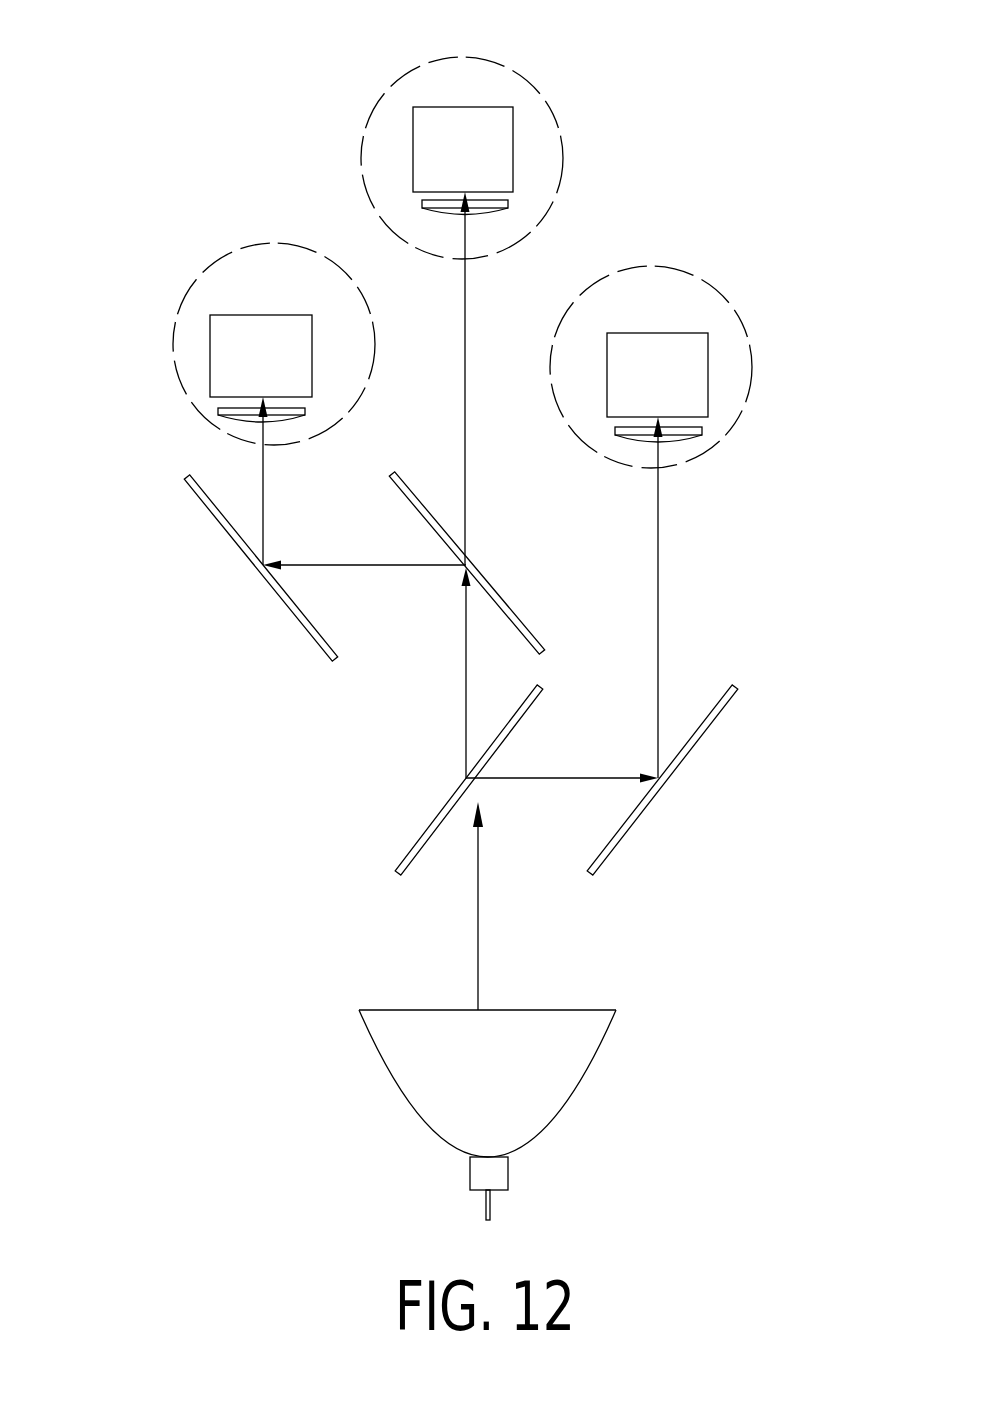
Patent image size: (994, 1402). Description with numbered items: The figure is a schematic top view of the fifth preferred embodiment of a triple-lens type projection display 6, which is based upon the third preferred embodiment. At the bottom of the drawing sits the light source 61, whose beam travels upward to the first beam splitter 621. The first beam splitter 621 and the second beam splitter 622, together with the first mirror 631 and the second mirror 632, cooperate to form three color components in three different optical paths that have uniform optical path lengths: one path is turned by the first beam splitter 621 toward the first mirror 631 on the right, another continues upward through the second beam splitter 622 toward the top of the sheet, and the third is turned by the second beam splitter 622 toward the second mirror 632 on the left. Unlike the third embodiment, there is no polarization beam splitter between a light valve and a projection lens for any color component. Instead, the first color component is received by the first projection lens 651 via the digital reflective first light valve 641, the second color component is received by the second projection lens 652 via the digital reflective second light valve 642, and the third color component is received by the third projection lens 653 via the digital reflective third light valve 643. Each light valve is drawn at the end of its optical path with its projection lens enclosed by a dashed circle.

The triple-lens type projection display 6 is at (213, 862).
The light source 61 is at (398, 1073).
The first beam splitter 621 is at (400, 862).
The second beam splitter 622 is at (525, 622).
The first mirror 631 is at (620, 838).
The second mirror 632 is at (294, 608).
The first light valve 641 is at (710, 393).
The second light valve 642 is at (513, 167).
The third light valve 643 is at (210, 355).
The first projection lens 651 is at (746, 330).
The second projection lens 652 is at (487, 58).
The third projection lens 653 is at (178, 305).